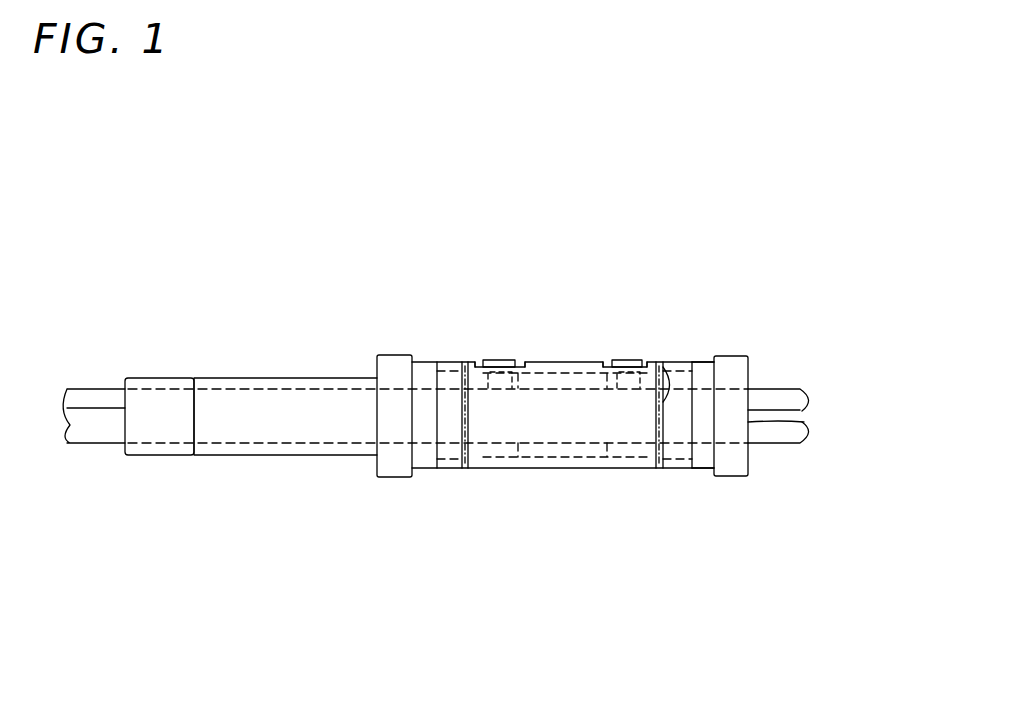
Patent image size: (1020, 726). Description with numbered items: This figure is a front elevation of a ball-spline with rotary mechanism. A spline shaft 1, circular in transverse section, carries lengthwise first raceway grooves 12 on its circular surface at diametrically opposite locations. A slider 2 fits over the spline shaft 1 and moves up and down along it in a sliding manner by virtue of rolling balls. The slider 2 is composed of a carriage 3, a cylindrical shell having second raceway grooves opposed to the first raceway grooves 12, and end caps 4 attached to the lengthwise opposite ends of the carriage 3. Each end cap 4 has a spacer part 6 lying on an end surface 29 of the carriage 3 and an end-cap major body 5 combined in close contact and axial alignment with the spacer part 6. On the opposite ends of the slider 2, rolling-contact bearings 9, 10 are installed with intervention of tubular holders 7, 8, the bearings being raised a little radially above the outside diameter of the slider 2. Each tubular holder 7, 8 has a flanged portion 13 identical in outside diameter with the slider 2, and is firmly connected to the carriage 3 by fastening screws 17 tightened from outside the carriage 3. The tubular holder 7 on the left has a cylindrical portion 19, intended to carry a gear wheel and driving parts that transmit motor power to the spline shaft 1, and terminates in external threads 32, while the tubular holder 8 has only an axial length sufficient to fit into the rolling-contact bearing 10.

The spline shaft 1 is at (93, 397).
The slider 2 is at (482, 346).
The carriage 3 is at (559, 462).
The end cap 4 is at (452, 350).
The end-cap major body 5 is at (450, 455).
The spacer part 6 is at (468, 412).
The tubular holder 7 is at (251, 381).
The tubular holder 8 is at (707, 415).
The rolling-contact bearing 9 is at (387, 462).
The rolling-contact bearing 10 is at (730, 468).
The first raceway grooves 12 is at (98, 415).
The flanged portion 13 is at (425, 358).
The fastening screws 17 is at (503, 358).
The cylindrical portion 19 is at (267, 427).
The end surfaces 29 is at (668, 358).
The external threads 32 is at (156, 378).